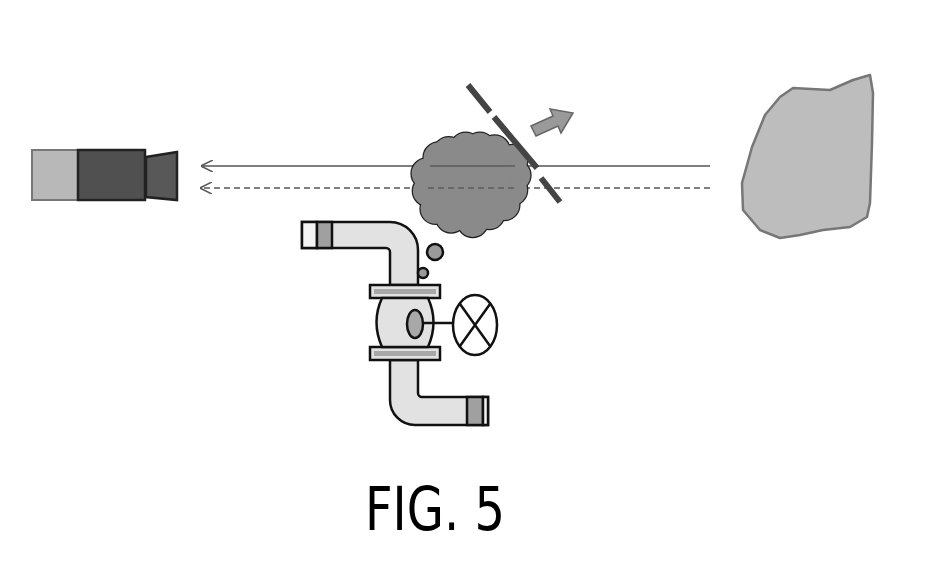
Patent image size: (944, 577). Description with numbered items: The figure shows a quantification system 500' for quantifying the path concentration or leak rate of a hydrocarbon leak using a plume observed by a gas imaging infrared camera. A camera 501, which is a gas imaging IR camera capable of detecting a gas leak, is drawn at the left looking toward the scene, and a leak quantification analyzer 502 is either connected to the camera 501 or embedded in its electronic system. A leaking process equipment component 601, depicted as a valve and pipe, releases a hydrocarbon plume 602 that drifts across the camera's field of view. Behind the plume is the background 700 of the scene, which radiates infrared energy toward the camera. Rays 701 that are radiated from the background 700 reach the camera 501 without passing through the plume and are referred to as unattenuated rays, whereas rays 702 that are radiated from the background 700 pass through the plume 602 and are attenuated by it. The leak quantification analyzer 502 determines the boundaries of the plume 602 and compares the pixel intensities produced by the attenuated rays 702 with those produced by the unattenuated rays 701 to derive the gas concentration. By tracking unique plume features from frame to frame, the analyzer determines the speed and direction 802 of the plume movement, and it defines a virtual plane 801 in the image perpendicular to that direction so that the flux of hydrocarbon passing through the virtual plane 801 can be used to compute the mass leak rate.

The quantification system 500' is at (114, 101).
The camera 501 is at (103, 152).
The leak quantification analyzer (LQA) 502 is at (53, 157).
The leaking process equipment component 601 is at (465, 272).
The hydrocarbon plume 602 is at (442, 142).
The background 700 is at (815, 235).
The unattenuated rays 701 is at (692, 166).
The attenuated rays 702 is at (595, 190).
The virtual plane 801 is at (480, 85).
The direction 802 is at (553, 107).